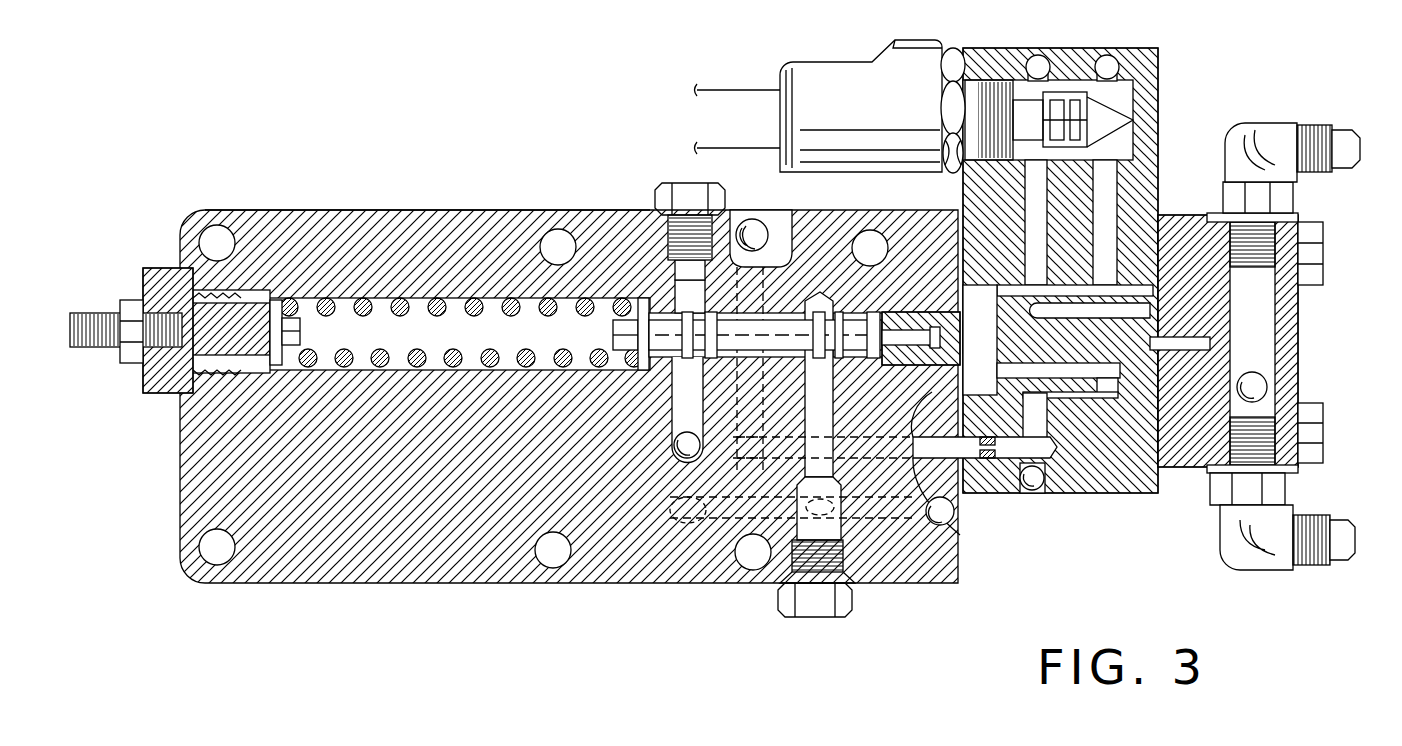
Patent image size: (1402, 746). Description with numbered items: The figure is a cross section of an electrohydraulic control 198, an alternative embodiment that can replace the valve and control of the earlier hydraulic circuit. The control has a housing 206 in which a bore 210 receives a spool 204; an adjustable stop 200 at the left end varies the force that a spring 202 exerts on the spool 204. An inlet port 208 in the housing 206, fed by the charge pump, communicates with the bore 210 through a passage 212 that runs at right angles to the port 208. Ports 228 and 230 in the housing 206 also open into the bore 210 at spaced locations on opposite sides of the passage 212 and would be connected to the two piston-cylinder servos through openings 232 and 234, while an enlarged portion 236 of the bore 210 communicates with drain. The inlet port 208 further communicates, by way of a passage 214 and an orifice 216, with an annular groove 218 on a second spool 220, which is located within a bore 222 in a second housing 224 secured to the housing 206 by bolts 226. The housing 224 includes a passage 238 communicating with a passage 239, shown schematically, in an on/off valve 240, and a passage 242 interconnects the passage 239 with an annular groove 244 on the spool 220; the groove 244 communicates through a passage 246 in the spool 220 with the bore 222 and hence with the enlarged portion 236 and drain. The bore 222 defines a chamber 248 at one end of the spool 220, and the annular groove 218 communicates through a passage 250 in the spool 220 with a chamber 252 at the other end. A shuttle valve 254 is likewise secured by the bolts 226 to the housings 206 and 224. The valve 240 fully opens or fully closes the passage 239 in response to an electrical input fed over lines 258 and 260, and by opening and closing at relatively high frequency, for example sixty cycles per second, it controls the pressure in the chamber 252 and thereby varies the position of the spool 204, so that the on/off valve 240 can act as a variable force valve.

The electrohydraulic control 198 is at (474, 193).
The adjustable stop 200 is at (168, 378).
The spring 202 is at (442, 362).
The spool 204 is at (782, 364).
The housing 206 is at (345, 218).
The inlet port 208 is at (768, 264).
The bore 210 is at (722, 357).
The passage 212 is at (768, 316).
The passage 214 is at (940, 440).
The orifice 216 is at (989, 476).
The annular groove 218 is at (1058, 400).
The spool 220 is at (1055, 363).
The bore 222 is at (976, 286).
The housing 224 is at (1150, 112).
The bolts 226 is at (1312, 264).
The port 228 is at (670, 395).
The port 230 is at (834, 378).
The opening 232 is at (672, 441).
The opening 234 is at (696, 520).
The enlarged portion of bore 236 is at (880, 312).
The passage 238 is at (1047, 215).
The passage 239 is at (1100, 98).
The on/off valve 240 is at (855, 70).
The passage 242 is at (1112, 200).
The annular groove 244 is at (1128, 285).
The passage 246 is at (1100, 372).
The chamber 248 is at (982, 382).
The passage 250 is at (1063, 318).
The chamber 252 is at (1166, 320).
The shuttle valve 254 is at (1310, 351).
The line 258 is at (762, 82).
The line 260 is at (765, 148).